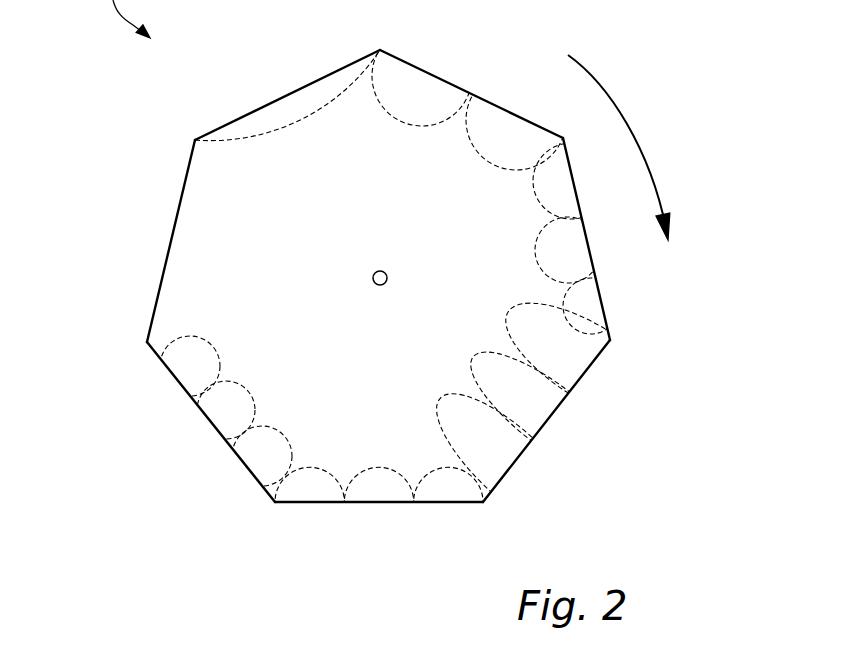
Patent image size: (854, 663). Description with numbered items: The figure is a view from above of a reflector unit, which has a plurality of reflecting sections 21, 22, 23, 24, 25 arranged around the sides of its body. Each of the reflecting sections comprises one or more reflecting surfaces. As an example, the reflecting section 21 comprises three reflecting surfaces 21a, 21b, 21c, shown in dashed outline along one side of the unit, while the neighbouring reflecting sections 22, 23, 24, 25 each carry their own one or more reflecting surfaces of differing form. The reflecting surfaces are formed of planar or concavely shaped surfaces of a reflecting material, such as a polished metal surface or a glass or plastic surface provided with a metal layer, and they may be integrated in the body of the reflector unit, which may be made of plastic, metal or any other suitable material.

The reflecting section 21 is at (612, 217).
The reflecting surface 21a is at (567, 190).
The reflecting surface 21b is at (575, 254).
The reflecting surface 21c is at (597, 314).
The reflecting section 22 is at (578, 433).
The reflecting section 23 is at (375, 533).
The reflecting section 24 is at (122, 212).
The reflecting section 25 is at (262, 75).